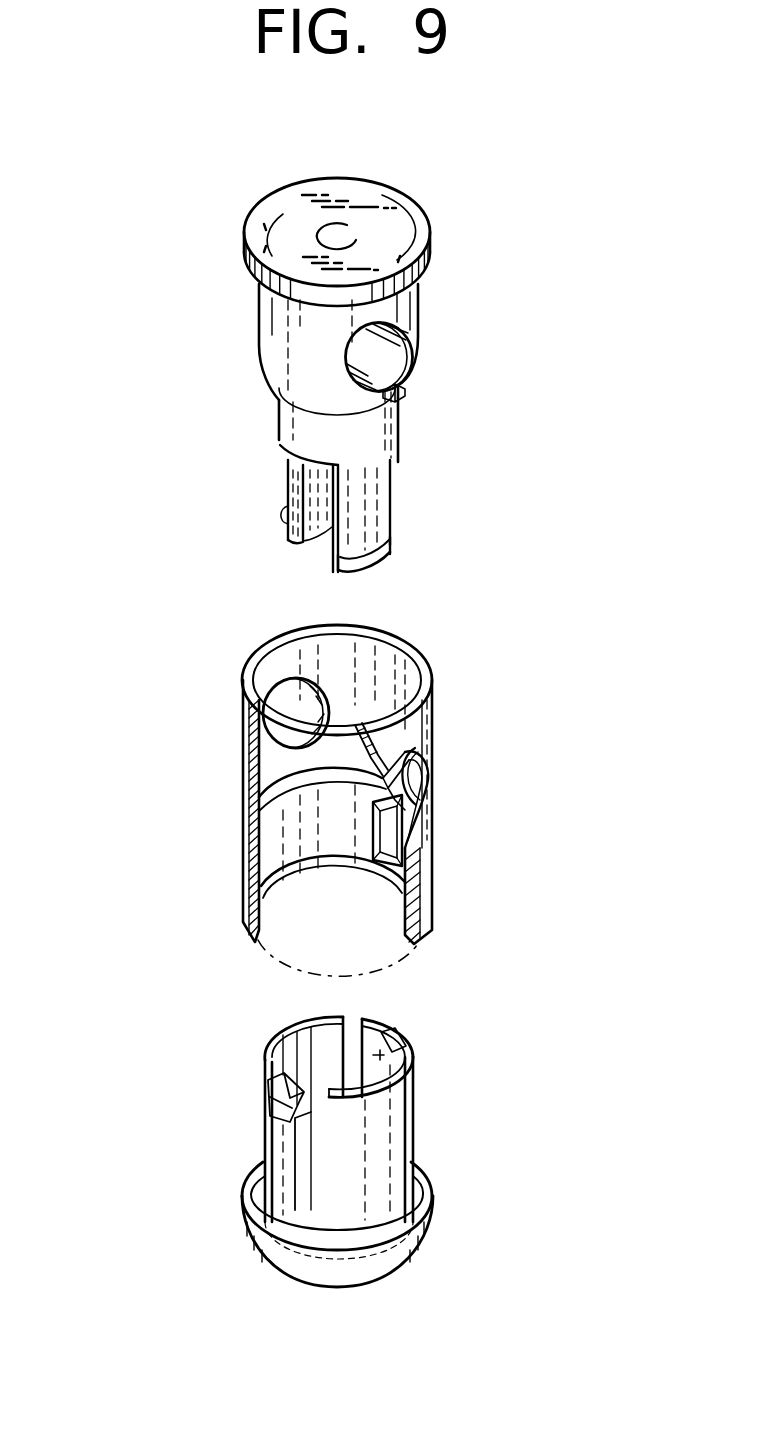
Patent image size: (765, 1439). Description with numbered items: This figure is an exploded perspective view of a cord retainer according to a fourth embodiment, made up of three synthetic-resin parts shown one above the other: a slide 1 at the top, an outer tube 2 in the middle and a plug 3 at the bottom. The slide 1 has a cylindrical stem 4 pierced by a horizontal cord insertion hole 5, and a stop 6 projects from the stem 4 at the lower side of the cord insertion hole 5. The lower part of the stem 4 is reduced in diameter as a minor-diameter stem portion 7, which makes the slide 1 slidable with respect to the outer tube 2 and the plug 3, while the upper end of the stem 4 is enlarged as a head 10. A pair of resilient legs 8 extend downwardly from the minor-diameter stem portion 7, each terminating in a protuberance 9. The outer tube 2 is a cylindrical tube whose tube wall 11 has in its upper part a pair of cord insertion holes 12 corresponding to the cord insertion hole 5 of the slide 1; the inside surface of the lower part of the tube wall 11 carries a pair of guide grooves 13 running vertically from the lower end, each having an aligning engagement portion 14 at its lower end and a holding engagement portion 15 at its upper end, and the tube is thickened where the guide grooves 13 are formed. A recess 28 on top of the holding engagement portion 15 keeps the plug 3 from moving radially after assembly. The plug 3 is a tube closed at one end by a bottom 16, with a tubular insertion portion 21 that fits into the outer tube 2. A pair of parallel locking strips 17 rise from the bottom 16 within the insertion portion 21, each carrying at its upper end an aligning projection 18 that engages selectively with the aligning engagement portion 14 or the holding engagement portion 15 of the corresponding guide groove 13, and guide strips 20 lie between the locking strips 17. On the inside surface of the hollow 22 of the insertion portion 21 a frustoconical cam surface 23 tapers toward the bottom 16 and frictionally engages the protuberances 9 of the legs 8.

The slide 1 is at (236, 348).
The outer tube 2 is at (235, 793).
The plug 3 is at (235, 1233).
The cylindrical stem 4 is at (410, 300).
The cord insertion hole 5 is at (375, 358).
The stop 6 is at (400, 393).
The minor-diameter stem portion 7 is at (295, 430).
The resilient legs 8 is at (367, 505).
The protuberance 9 is at (368, 558).
The head 10 is at (290, 222).
The tube wall 11 is at (410, 733).
The cord insertion holes 12 is at (292, 697).
The guide grooves 13 is at (427, 857).
The aligning engagement portion 14 is at (392, 868).
The holding engagement portion 15 is at (430, 803).
The bottom 16 is at (352, 1286).
The locking strips 17 is at (397, 1045).
The aligning projection 18 is at (267, 1085).
The guide strips 20 is at (405, 1103).
The tubular insertion portion 21 is at (385, 1158).
The hollow 22 is at (352, 1042).
The frustoconical cam surface 23 is at (320, 1182).
The recess 28 is at (427, 777).